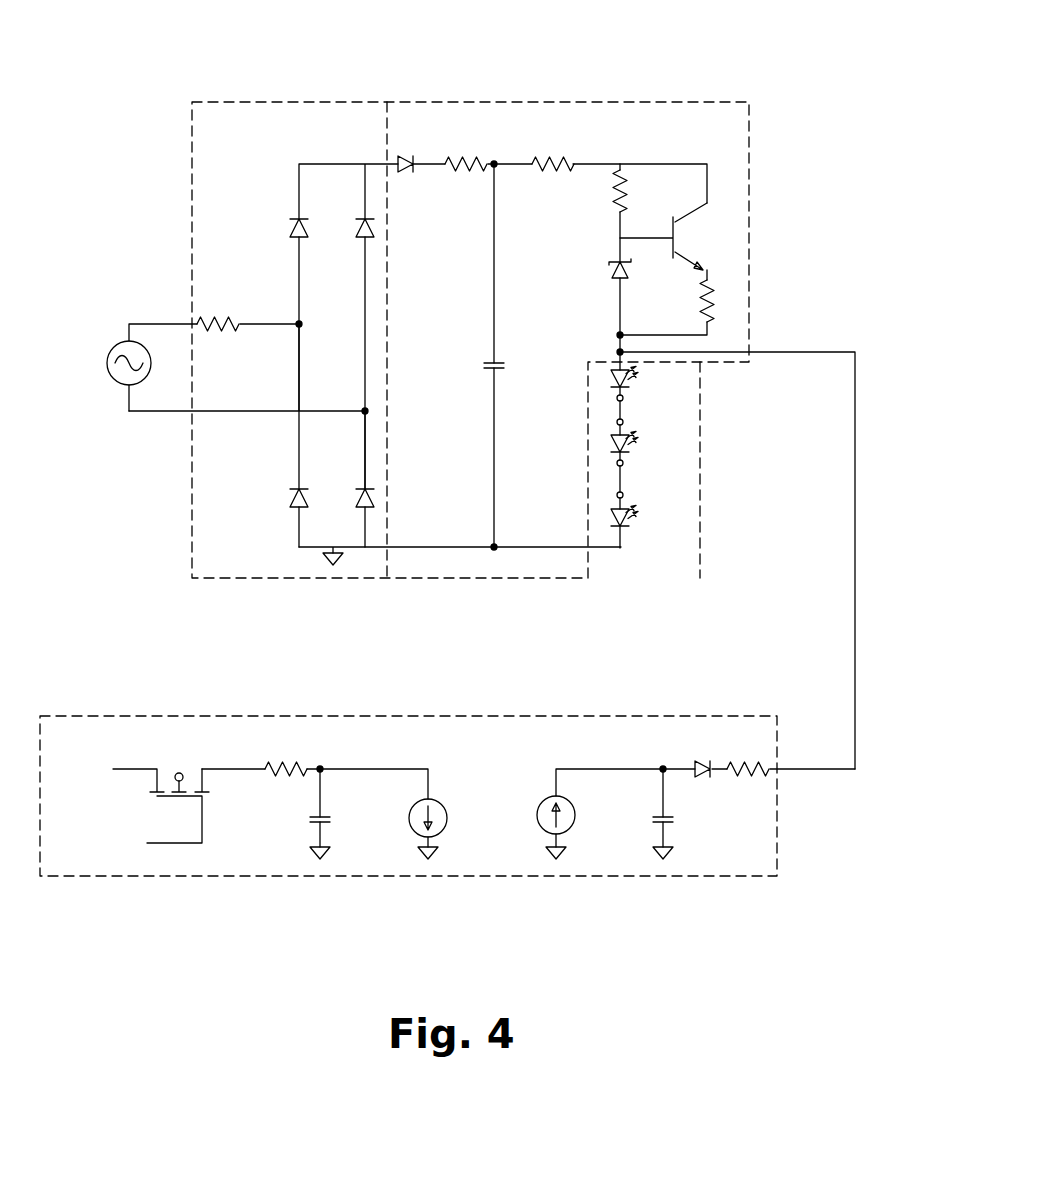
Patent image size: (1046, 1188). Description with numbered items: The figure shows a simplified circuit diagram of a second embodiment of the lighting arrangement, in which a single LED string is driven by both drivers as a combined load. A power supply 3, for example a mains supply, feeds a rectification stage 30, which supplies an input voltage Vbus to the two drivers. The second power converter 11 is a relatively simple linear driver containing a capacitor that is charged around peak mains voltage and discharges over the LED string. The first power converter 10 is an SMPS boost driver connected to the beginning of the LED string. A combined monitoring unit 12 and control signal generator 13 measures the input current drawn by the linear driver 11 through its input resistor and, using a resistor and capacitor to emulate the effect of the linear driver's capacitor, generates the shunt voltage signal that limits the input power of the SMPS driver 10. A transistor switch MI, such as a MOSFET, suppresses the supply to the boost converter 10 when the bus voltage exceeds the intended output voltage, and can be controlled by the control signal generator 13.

The rectification stage 30 is at (207, 101).
The second power converter 11 is at (717, 101).
The power supply 3 is at (114, 345).
The monitoring unit 12 is at (447, 780).
The control signal generator 13 is at (437, 653).
The transistor switch MI is at (163, 760).
The first power converter 10 is at (212, 877).